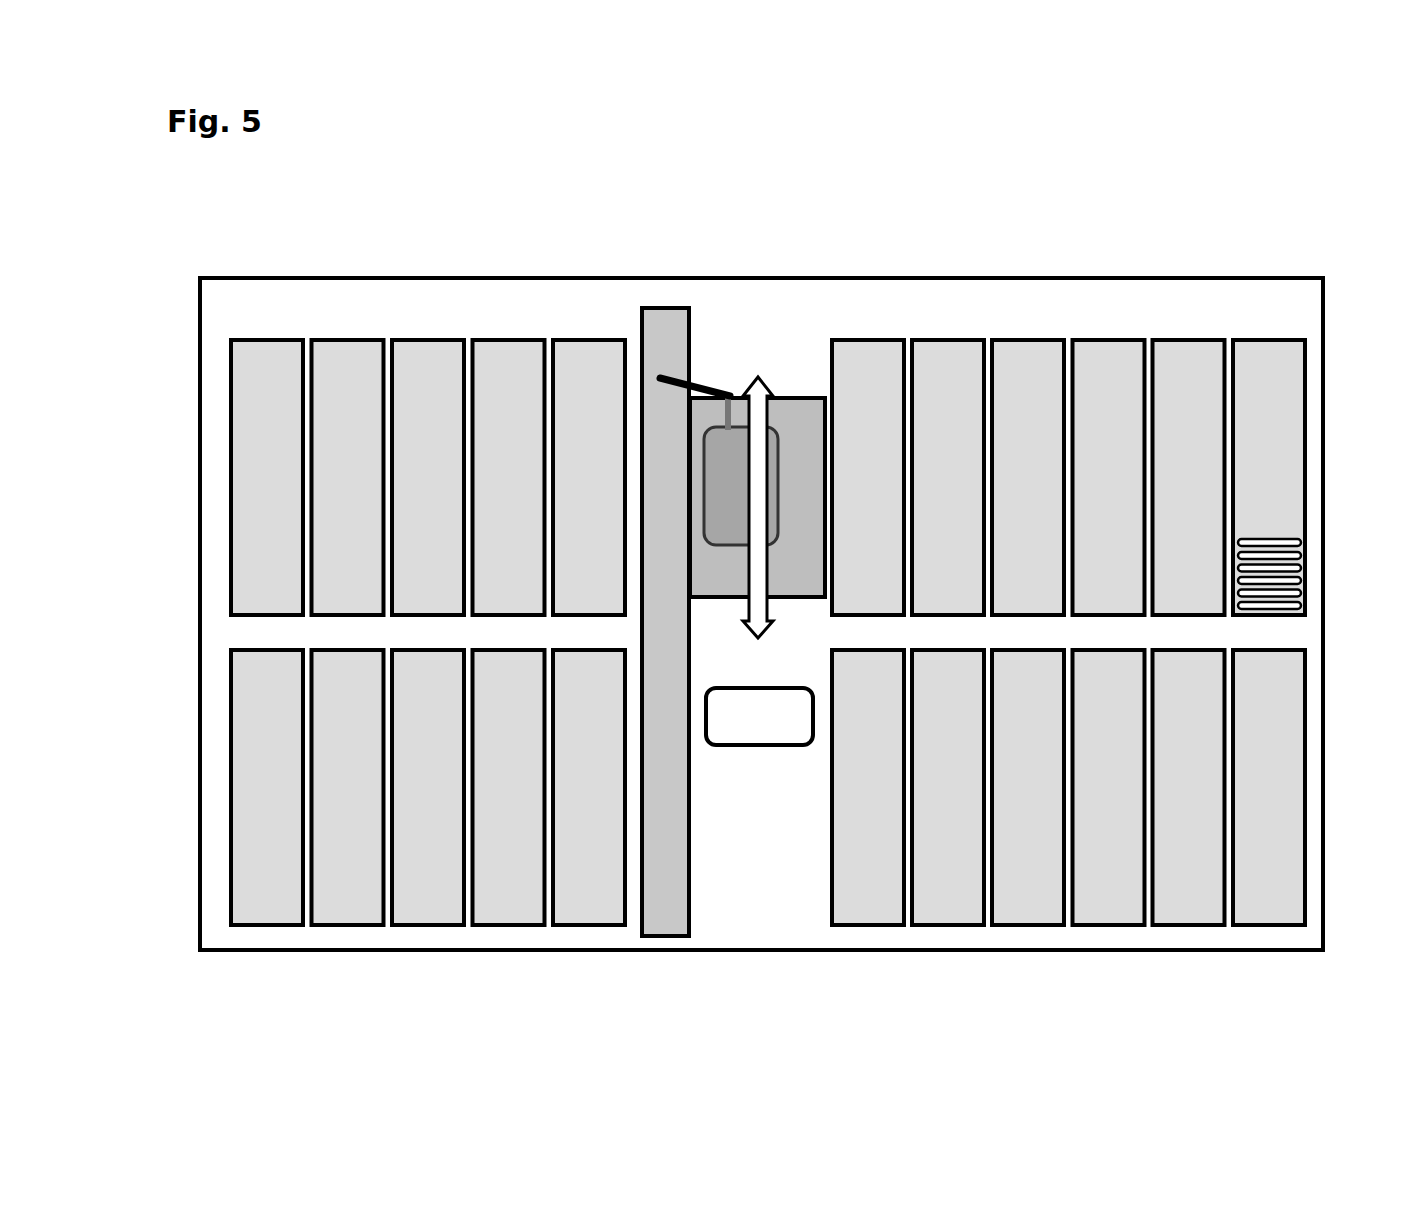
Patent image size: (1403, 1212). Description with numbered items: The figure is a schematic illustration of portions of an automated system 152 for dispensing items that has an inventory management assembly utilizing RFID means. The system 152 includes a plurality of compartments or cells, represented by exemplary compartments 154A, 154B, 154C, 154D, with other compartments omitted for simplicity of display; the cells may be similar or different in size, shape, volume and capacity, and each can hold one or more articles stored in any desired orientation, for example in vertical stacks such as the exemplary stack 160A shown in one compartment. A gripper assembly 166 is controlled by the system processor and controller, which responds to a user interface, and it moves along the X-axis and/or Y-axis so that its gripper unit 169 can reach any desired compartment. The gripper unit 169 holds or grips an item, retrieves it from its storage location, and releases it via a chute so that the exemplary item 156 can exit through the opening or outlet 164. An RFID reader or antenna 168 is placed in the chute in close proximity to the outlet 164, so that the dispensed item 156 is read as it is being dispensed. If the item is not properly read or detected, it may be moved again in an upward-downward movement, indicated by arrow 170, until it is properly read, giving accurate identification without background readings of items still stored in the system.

The system 152 is at (534, 224).
The compartment 154A is at (1270, 340).
The compartment 154B is at (1189, 340).
The compartment 154C is at (1109, 340).
The compartment 154D is at (1032, 340).
The item 156 is at (727, 538).
The stack 160A is at (1302, 578).
The outlet 164 is at (757, 749).
The gripper assembly 166 is at (706, 346).
The RFID reader 168 is at (808, 390).
The gripper unit 169 is at (731, 373).
The arrow 170 is at (784, 622).